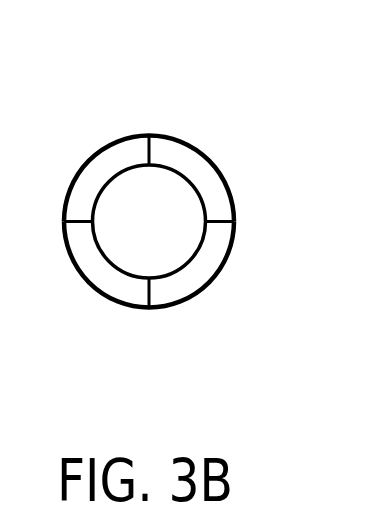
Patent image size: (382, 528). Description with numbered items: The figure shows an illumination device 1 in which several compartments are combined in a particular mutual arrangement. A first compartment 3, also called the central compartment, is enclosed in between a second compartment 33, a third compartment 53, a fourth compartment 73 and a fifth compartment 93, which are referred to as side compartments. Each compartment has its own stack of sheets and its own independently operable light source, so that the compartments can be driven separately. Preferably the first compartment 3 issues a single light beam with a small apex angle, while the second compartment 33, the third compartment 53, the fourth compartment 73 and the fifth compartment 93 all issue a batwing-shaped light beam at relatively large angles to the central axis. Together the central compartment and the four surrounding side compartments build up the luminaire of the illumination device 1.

The illumination device 1 is at (185, 210).
The first compartment 3 is at (176, 246).
The second compartment 33 is at (189, 292).
The third compartment 53 is at (115, 292).
The fourth compartment 73 is at (197, 152).
The fifth compartment 93 is at (113, 153).